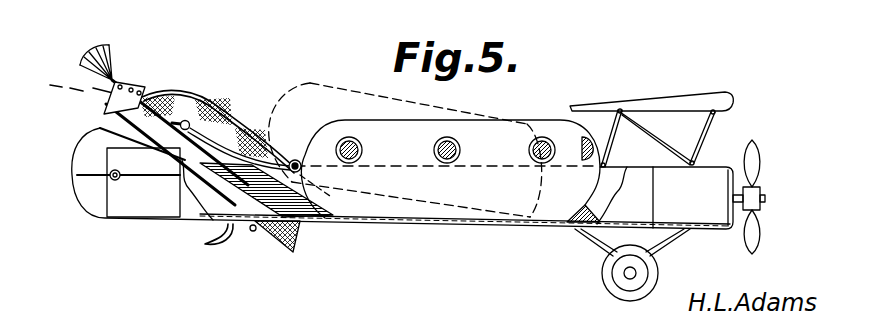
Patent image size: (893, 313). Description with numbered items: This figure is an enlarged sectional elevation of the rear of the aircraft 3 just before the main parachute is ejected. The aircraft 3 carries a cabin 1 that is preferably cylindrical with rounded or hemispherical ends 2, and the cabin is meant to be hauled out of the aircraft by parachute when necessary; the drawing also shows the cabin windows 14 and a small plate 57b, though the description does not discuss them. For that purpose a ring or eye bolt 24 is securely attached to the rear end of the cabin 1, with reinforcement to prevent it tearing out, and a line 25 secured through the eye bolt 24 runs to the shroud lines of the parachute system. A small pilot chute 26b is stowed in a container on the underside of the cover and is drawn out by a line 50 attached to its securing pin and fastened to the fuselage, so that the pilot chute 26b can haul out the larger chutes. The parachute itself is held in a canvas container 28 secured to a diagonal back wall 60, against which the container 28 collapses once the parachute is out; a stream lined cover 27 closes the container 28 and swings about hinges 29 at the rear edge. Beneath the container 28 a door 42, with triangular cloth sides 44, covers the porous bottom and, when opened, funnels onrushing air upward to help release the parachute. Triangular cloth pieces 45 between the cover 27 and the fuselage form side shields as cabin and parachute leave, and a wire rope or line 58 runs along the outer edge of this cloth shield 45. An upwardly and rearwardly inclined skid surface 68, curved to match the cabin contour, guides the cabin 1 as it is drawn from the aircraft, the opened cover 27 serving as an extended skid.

The cabin 1 is at (563, 203).
The rounded or hemispherical ends 2 is at (303, 85).
The aircraft 3 is at (720, 217).
The windows 14 is at (361, 150).
The eye bolt 24 is at (295, 159).
The line 25 is at (85, 90).
The pilot chute 26b is at (98, 49).
The stream lined cover 27 is at (113, 112).
The parachute container 28 is at (232, 192).
The hinges 29 is at (178, 152).
The door 42 is at (277, 243).
The triangular cloth sides 44 is at (300, 233).
The triangular cloth shield 45 is at (182, 120).
The line 50 is at (243, 99).
The plate 57b is at (128, 80).
The wire rope or line 58 is at (191, 116).
The diagonal back wall 60 is at (220, 188).
The skid surface 68 is at (318, 197).